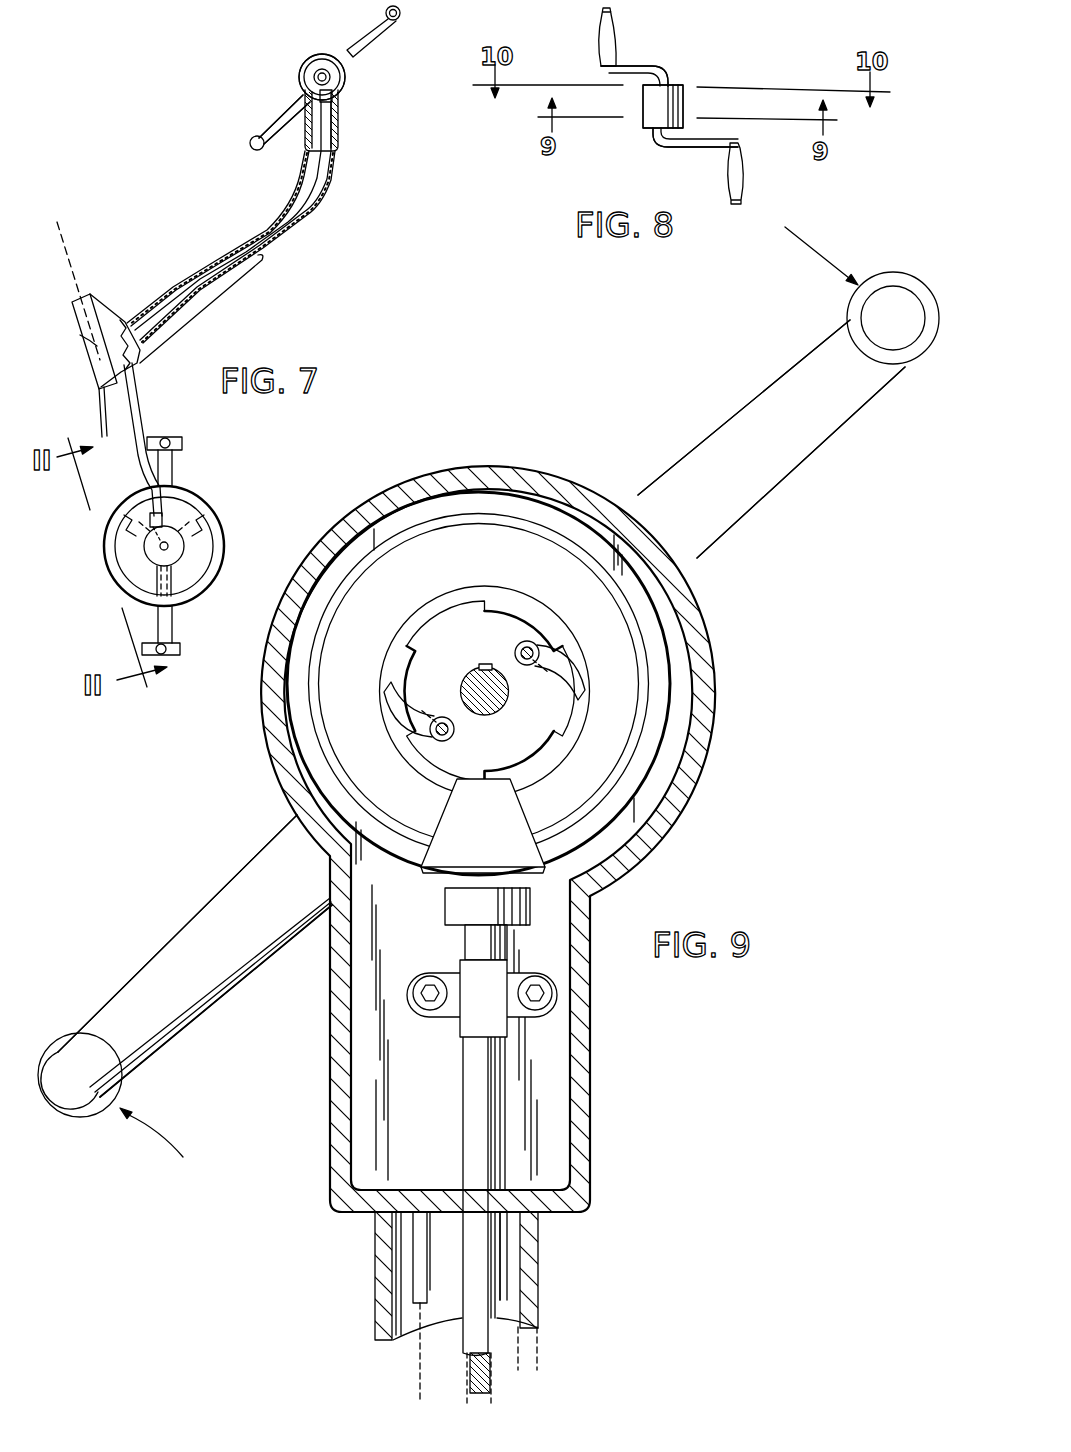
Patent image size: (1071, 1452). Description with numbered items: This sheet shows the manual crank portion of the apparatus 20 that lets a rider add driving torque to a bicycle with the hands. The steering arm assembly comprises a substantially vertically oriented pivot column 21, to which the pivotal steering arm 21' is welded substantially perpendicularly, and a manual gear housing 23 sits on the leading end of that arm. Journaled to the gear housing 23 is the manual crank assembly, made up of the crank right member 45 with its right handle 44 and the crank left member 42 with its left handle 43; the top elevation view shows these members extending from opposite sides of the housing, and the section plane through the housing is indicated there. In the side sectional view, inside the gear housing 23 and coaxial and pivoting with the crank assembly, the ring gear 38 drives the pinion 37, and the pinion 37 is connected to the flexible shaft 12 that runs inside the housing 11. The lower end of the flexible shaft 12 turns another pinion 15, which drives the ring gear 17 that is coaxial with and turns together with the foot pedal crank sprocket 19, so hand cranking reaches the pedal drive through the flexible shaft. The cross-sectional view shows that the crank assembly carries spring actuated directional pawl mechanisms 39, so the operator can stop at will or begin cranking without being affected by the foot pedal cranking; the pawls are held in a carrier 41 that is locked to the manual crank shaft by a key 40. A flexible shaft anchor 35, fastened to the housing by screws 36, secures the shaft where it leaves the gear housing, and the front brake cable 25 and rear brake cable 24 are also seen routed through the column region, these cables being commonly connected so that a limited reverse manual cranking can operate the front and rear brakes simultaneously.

In FIG. 7, the housing 11 is at (137, 408).
In FIG. 9, the housing 11 is at (467, 1118).
In FIG. 9, the flexible shaft 12 is at (503, 938).
In FIG. 7, the pinion 15 is at (160, 540).
In FIG. 7, the ring gear 17 is at (143, 543).
In FIG. 7, the foot pedal crank sprocket 19 is at (222, 521).
In FIG. 7, the apparatus 20 is at (197, 124).
In FIG. 8, the apparatus 20 is at (698, 48).
In FIG. 9, the apparatus 20 is at (771, 590).
In FIG. 7, the pivot column 21 is at (101, 326).
In FIG. 9, the pivot column 21 is at (485, 1276).
In FIG. 7, the pivotal steering arm 21' is at (251, 257).
In FIG. 7, the manual gear housing 23 is at (338, 140).
In FIG. 8, the manual gear housing 23 is at (680, 85).
In FIG. 9, the manual gear housing 23 is at (590, 1098).
In FIG. 7, the rear brake cable 24 is at (93, 347).
In FIG. 9, the rear brake cable 24 is at (417, 1262).
In FIG. 7, the front brake cable 25 is at (112, 400).
In FIG. 9, the front brake cable 25 is at (505, 1295).
In FIG. 9, the flexible shaft anchor 35 is at (427, 972).
In FIG. 9, the screws 36 is at (537, 976).
In FIG. 7, the pinion 37 is at (326, 86).
In FIG. 9, the pinion 37 is at (453, 907).
In FIG. 7, the ring gear 38 is at (310, 68).
In FIG. 9, the ring gear 38 is at (630, 737).
In FIG. 9, the spring actuated directional pawl mechanisms 39 is at (570, 682).
In FIG. 9, the key 40 is at (486, 666).
In FIG. 9, the carrier 41 is at (533, 733).
In FIG. 7, the crank left member 42 is at (273, 123).
In FIG. 8, the crank left member 42 is at (632, 66).
In FIG. 9, the crank left member 42 is at (247, 980).
In FIG. 7, the left handle 43 is at (258, 150).
In FIG. 8, the left handle 43 is at (597, 33).
In FIG. 9, the left handle 43 is at (130, 1092).
In FIG. 7, the right handle 44 is at (398, 19).
In FIG. 8, the right handle 44 is at (743, 163).
In FIG. 9, the right handle 44 is at (905, 367).
In FIG. 7, the crank right member 45 is at (363, 32).
In FIG. 8, the crank right member 45 is at (690, 143).
In FIG. 9, the crank right member 45 is at (833, 425).